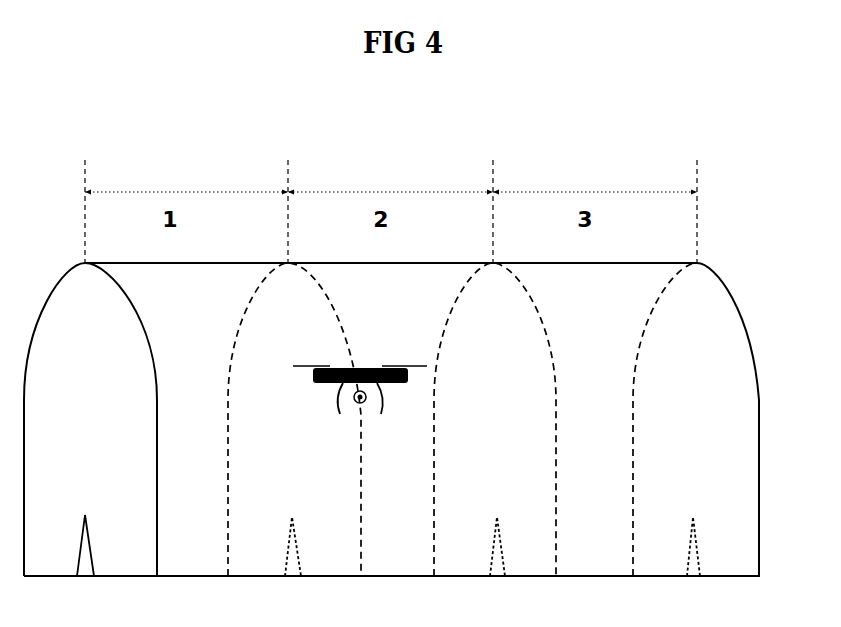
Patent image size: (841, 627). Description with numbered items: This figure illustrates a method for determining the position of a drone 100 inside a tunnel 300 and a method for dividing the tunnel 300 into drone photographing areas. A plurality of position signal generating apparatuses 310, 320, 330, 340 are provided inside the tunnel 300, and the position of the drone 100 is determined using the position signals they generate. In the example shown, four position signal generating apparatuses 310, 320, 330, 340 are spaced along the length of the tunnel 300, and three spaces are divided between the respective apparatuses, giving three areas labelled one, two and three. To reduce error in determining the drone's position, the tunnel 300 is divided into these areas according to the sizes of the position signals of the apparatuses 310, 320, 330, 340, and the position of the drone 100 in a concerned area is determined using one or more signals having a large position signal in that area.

The drone 100 is at (362, 367).
The tunnel 300 is at (706, 297).
The position signal generating apparatus 310 is at (87, 514).
The position signal generating apparatus 320 is at (295, 518).
The position signal generating apparatus 330 is at (500, 517).
The position signal generating apparatus 340 is at (698, 516).